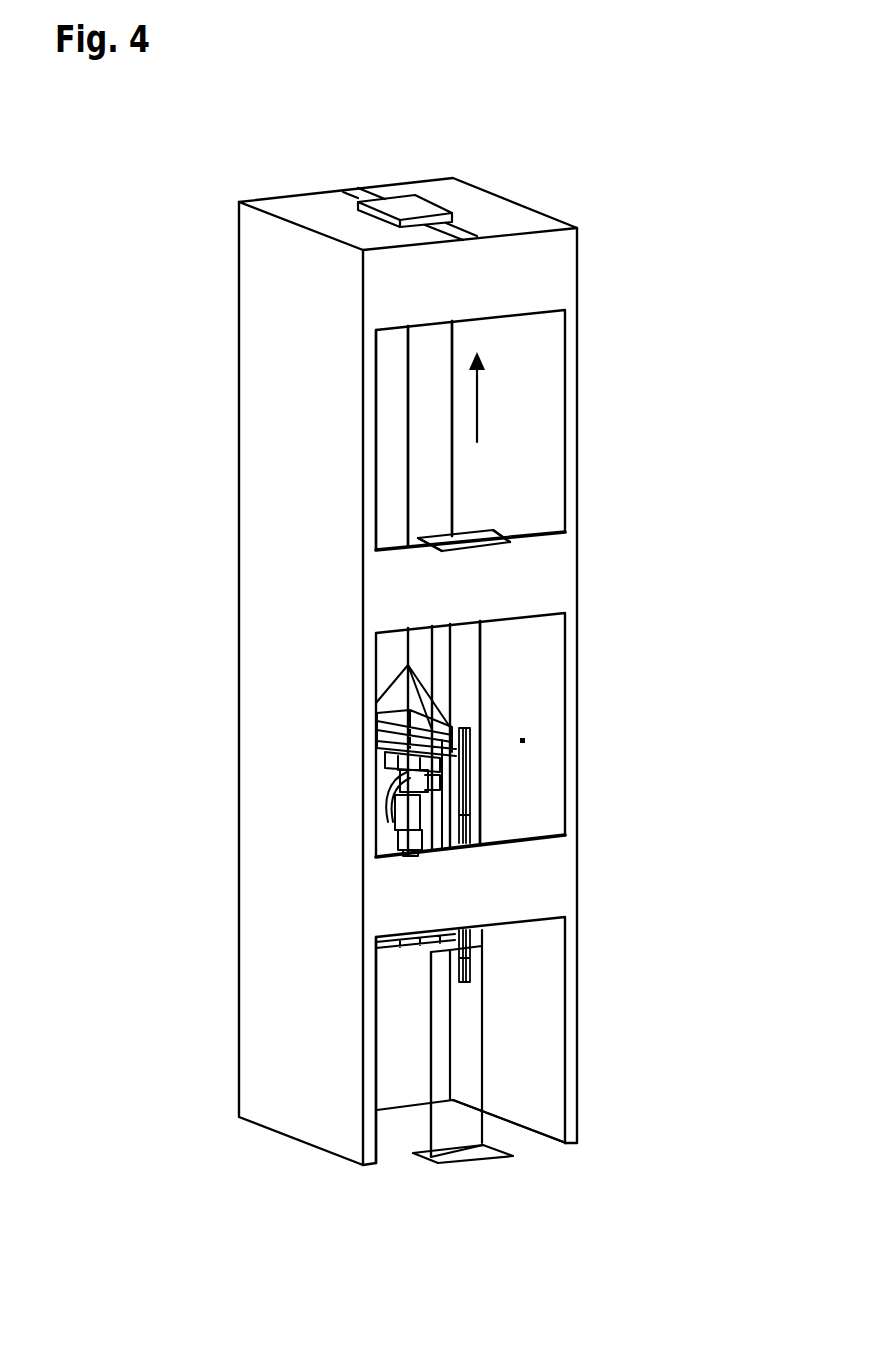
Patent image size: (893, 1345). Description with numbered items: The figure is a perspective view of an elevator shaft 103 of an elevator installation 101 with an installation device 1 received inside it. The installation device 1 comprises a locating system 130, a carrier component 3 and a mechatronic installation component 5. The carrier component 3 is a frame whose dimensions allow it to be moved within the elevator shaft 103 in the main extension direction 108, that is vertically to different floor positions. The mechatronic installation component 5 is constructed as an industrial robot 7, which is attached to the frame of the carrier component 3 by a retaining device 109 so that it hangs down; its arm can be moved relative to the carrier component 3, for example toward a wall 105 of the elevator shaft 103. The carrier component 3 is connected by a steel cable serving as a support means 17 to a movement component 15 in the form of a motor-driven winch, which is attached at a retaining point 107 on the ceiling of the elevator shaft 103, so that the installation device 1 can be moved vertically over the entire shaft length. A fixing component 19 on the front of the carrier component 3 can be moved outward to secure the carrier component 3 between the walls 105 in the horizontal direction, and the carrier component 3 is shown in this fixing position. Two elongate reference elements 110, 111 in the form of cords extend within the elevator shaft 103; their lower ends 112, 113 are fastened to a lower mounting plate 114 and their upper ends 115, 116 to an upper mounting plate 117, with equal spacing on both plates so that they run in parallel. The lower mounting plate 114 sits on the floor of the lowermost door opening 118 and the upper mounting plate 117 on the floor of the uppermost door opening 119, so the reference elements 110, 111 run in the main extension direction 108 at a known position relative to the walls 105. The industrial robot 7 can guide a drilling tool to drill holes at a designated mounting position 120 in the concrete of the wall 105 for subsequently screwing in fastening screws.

The installation device 1 is at (372, 755).
The carrier component 3 is at (392, 747).
The mechatronic installation component 5 is at (372, 795).
The industrial robot 7 is at (395, 840).
The movement component 15 is at (397, 203).
The support means 17 is at (407, 473).
The fixing component 19 is at (463, 960).
The elevator installation 101 is at (606, 396).
The elevator shaft 103 is at (530, 688).
The wall 105 is at (545, 468).
The retaining point 107 is at (466, 220).
The main extension direction 108 is at (488, 398).
The retaining device 109 is at (395, 733).
The reference element 110 is at (482, 1083).
The reference element 111 is at (428, 1080).
The lower end 112 is at (427, 1138).
The lower end 113 is at (483, 1135).
The lower mounting plate 114 is at (460, 1153).
The upper end 115 is at (418, 540).
The upper end 116 is at (495, 532).
The upper mounting plate 117 is at (512, 547).
The lowermost door opening 118 is at (393, 1020).
The uppermost door opening 119 is at (389, 410).
The mounting position 120 is at (530, 740).
The locating system 130 is at (393, 745).